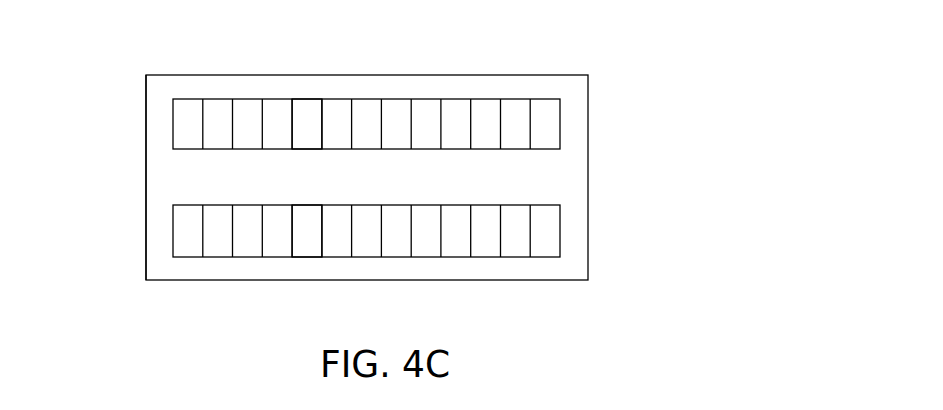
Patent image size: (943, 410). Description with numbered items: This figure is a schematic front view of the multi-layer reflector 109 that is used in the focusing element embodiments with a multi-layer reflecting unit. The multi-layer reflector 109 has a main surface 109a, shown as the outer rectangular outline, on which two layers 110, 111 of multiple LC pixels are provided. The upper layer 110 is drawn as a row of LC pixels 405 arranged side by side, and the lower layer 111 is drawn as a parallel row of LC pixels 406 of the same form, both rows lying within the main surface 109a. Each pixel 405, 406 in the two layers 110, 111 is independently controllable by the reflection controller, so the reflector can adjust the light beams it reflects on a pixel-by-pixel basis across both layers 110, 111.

The multi-layer reflector 109 is at (517, 75).
The main surface 109a is at (173, 175).
The layer of LC pixels 110 is at (560, 123).
The layer of LC pixels 111 is at (560, 233).
The LC pixel 405 is at (306, 117).
The LC pixel 406 is at (306, 242).